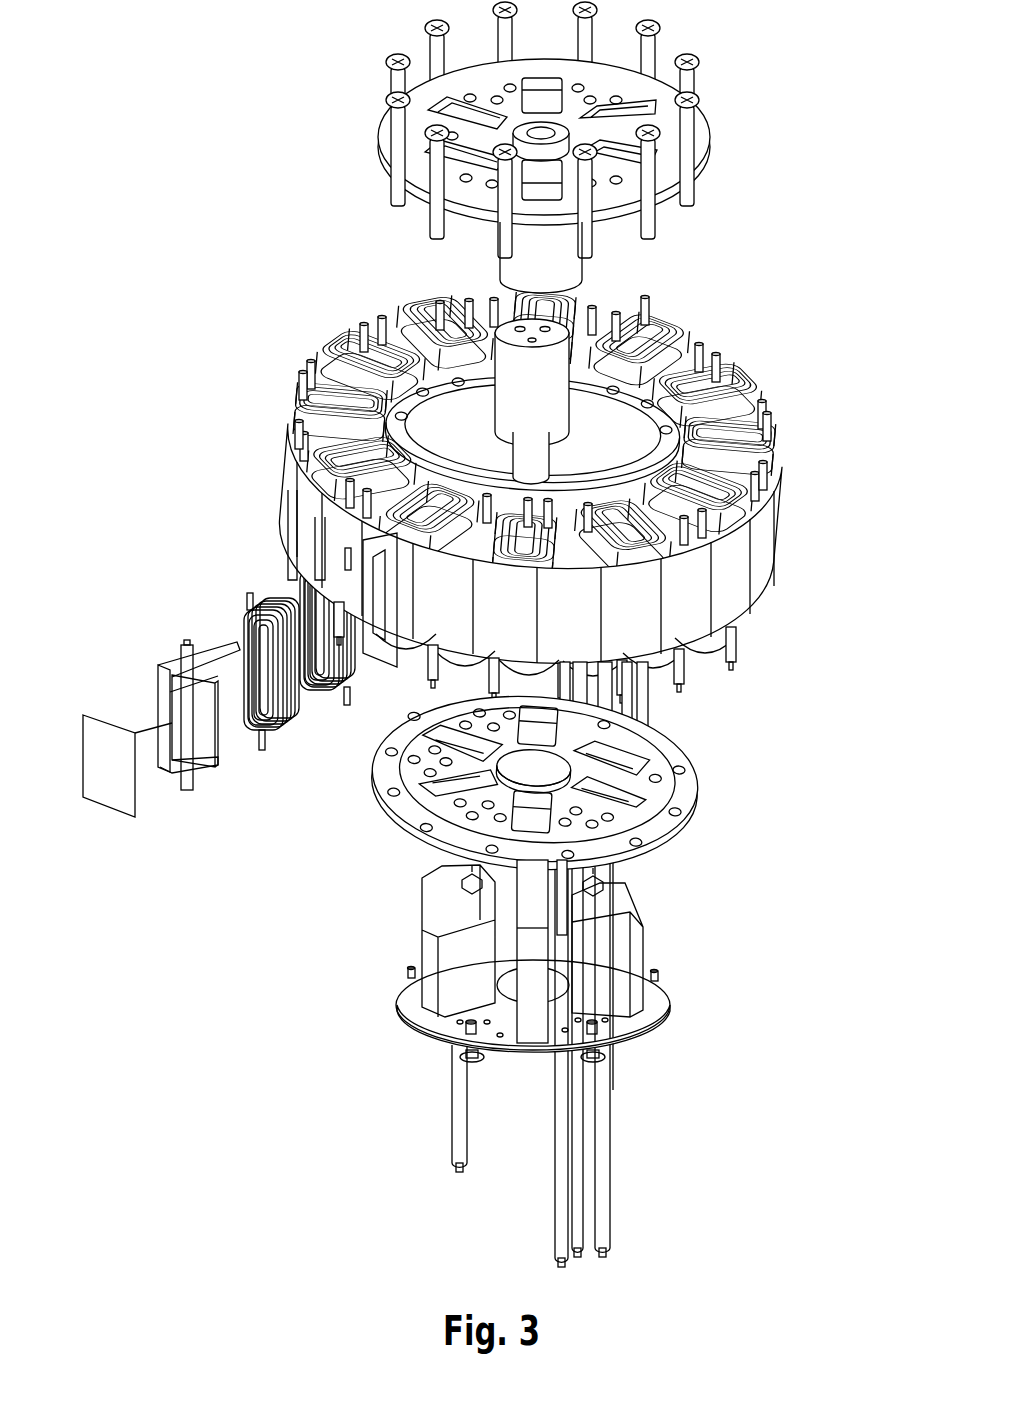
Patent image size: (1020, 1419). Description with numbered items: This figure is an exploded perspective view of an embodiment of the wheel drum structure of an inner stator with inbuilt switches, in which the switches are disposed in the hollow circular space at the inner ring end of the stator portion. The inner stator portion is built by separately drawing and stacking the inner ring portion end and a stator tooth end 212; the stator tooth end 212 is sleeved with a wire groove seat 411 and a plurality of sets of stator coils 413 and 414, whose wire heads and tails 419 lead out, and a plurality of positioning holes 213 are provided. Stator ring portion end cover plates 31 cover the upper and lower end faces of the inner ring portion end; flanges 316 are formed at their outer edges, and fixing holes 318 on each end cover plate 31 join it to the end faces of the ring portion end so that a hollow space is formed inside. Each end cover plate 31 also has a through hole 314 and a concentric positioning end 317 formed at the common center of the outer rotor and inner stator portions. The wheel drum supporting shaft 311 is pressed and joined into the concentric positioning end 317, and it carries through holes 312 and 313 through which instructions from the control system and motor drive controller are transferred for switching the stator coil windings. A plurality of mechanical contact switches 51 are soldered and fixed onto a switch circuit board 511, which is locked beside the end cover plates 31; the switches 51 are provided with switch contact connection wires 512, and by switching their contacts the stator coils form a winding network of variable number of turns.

The stator ring portion end cover plate 31 is at (494, 425).
The wheel drum supporting shaft 311 is at (530, 270).
The through hole 312 is at (395, 186).
The through hole 313 is at (505, 356).
The through hole 314 is at (494, 425).
The flange 316 is at (452, 862).
The concentric positioning end 317 is at (693, 146).
The fixing hole 318 is at (519, 783).
The stator tooth end 212 is at (112, 790).
The positioning hole 213 is at (517, 565).
The wire groove seat 411 is at (182, 655).
The stator coil 413 is at (529, 538).
The stator coil 414 is at (768, 406).
The wire head/tail of coil 419 is at (646, 320).
The switch 51 is at (440, 905).
The switch circuit board 511 is at (561, 962).
The switch contact connection wire 512 is at (568, 705).